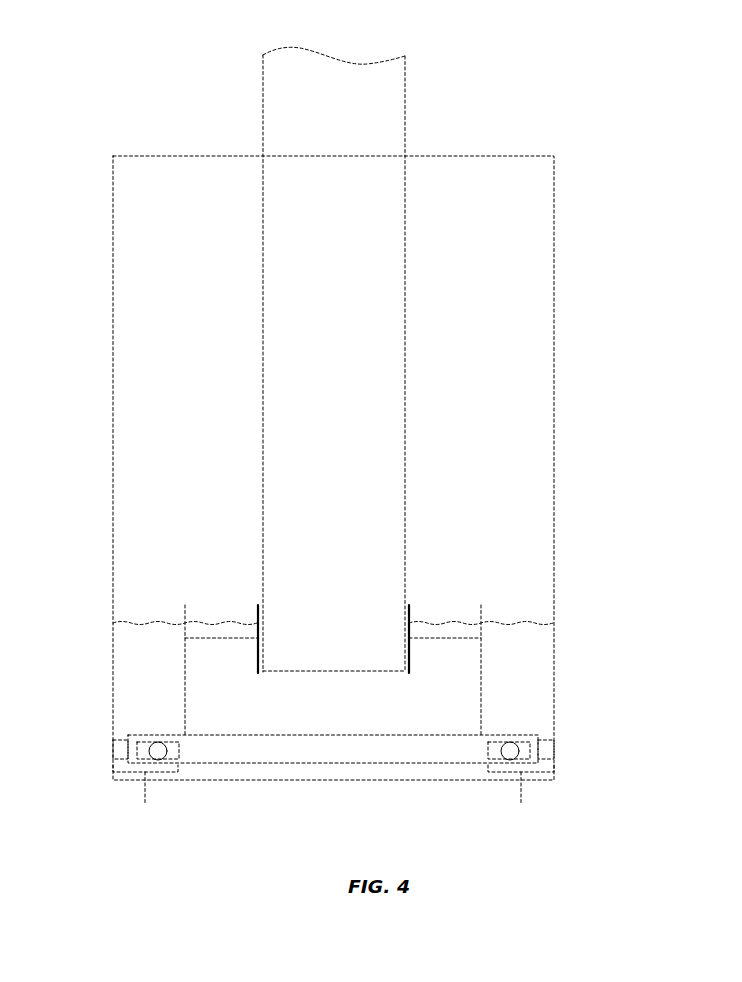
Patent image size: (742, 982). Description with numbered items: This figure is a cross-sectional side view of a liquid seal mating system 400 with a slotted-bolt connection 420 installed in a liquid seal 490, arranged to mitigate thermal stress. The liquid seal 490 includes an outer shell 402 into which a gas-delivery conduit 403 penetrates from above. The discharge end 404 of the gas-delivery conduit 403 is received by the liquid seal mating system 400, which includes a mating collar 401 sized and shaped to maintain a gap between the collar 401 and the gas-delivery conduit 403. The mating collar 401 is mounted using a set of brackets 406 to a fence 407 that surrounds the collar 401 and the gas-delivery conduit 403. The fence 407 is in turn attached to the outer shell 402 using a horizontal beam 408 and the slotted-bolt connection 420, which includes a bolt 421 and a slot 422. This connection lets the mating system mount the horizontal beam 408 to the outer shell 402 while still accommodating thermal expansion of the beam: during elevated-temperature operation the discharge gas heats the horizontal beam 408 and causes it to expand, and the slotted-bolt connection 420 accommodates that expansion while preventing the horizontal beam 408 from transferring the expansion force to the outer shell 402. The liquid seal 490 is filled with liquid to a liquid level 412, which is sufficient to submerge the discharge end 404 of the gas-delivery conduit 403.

The liquid seal 490 is at (105, 62).
The liquid seal mating system 400 is at (130, 605).
The mating collar 401 is at (257, 614).
The outer shell 402 is at (112, 450).
The gas-delivery conduit 403 is at (262, 397).
The discharge end 404 is at (298, 672).
The brackets 406 is at (213, 640).
The fence 407 is at (185, 695).
The horizontal beam 408 is at (367, 752).
The liquid level 412 is at (531, 623).
The slotted-bolt connection 420 is at (333, 797).
The bolt 421 is at (158, 751).
The slot 422 is at (172, 744).